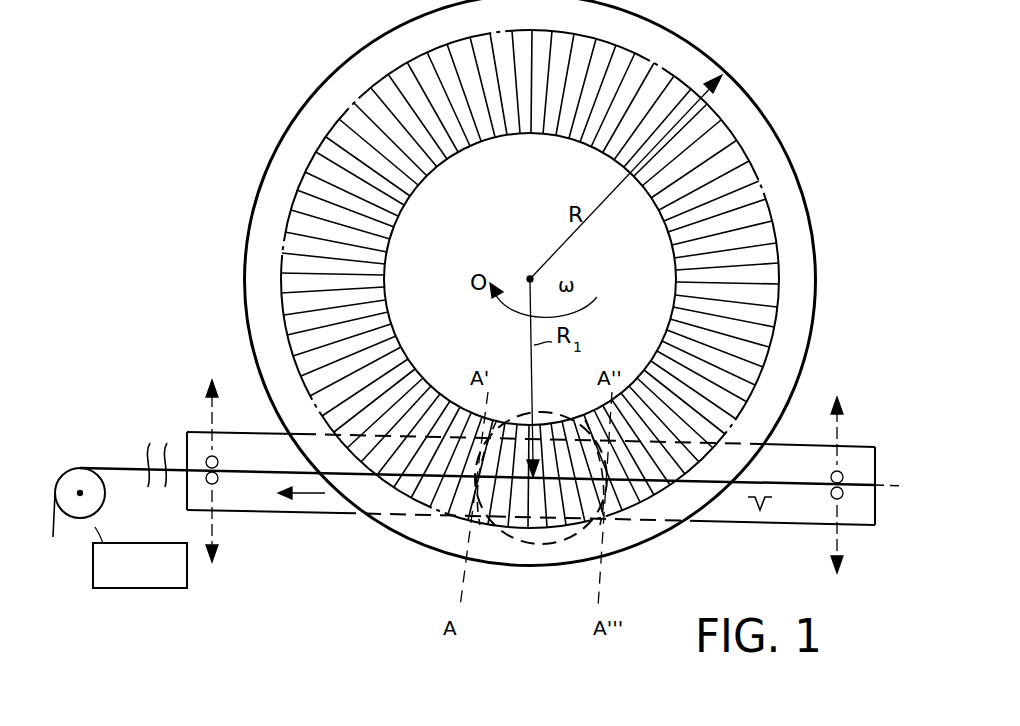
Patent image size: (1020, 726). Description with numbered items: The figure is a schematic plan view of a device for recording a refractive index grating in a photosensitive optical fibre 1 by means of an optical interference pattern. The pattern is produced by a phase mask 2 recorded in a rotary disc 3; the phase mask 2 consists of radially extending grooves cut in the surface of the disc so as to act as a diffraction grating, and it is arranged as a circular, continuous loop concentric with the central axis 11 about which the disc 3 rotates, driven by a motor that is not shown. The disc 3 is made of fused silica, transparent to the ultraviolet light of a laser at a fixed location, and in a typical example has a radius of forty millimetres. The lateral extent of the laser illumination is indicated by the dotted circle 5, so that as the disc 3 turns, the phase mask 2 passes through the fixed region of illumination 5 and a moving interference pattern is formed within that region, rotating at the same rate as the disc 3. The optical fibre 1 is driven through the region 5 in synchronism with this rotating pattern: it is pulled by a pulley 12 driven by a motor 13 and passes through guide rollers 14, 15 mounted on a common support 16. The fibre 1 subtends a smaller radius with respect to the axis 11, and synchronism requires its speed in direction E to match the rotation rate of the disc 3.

The photosensitive optical fibre 1 is at (790, 490).
The phase mask 2 is at (748, 303).
The rotary disc 3 is at (787, 152).
The region of illumination 5 is at (545, 545).
The central axis 11 is at (528, 277).
The pulley 12 is at (85, 470).
The motor 13 is at (160, 588).
The guide roller 14 is at (208, 455).
The guide roller 15 is at (843, 472).
The common support 16 is at (865, 527).